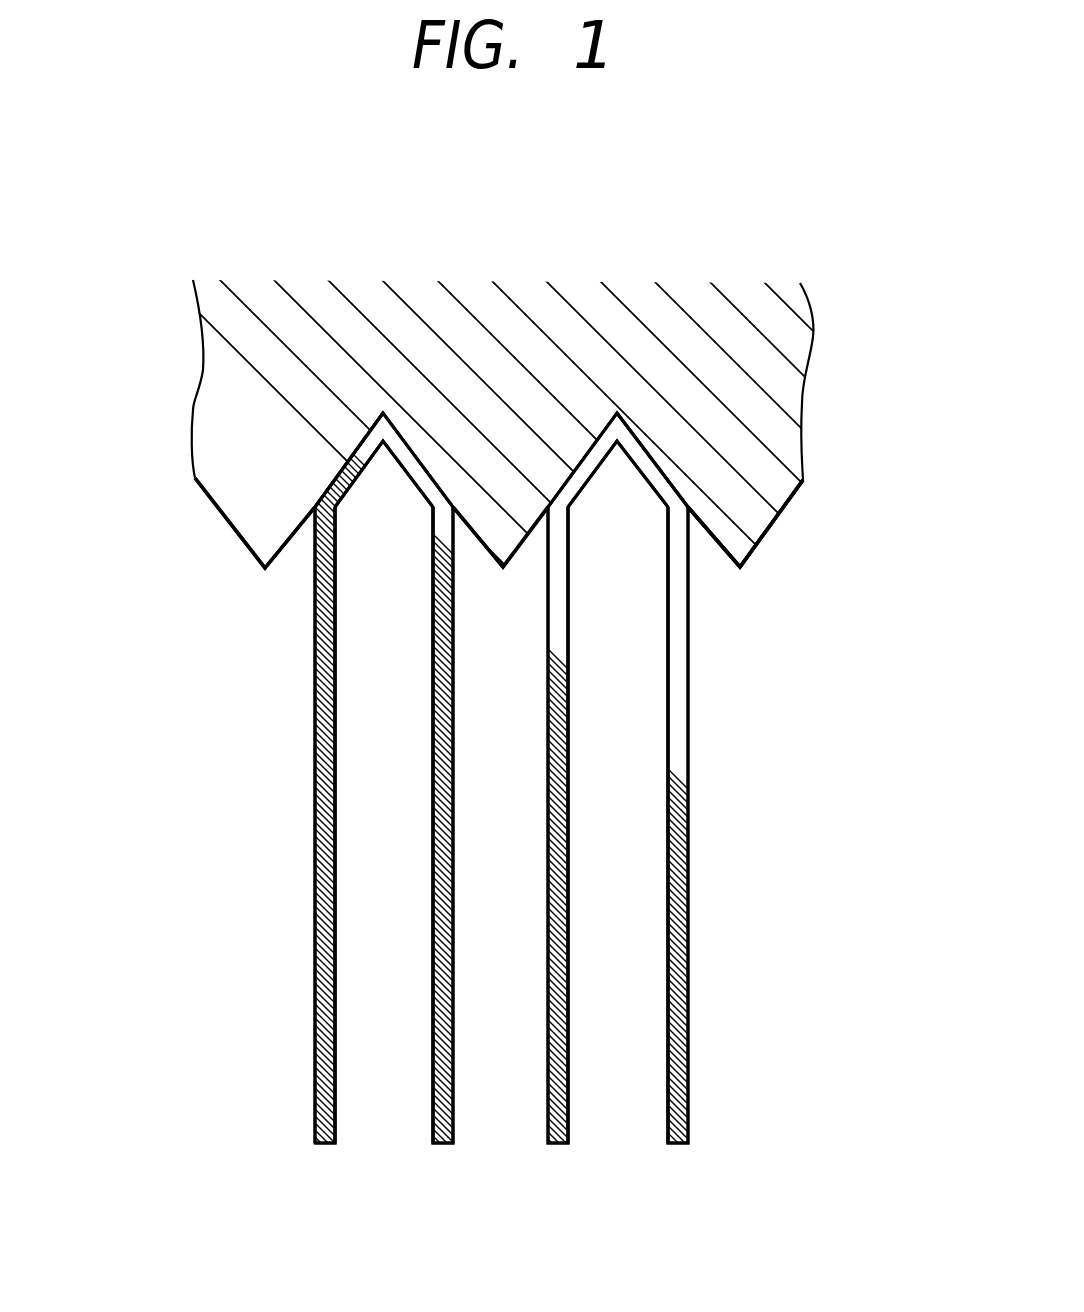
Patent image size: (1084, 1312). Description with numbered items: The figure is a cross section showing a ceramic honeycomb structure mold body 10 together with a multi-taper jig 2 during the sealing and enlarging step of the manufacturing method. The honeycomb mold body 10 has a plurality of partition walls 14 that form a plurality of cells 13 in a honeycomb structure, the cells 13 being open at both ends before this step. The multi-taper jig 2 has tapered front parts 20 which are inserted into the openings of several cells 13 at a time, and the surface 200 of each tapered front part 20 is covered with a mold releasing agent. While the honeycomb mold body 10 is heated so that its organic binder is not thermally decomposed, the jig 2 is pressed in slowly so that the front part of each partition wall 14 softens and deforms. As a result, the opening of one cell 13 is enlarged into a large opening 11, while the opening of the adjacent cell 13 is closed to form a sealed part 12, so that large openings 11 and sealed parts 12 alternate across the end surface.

The multi-taper jig 2 is at (493, 423).
The ceramic honeycomb structure mold body 10 is at (740, 792).
The large opening 11 is at (365, 445).
The sealed part 12 is at (383, 413).
The cell 13 is at (483, 945).
The partition wall 14 is at (437, 768).
The tapered front part 20 is at (250, 503).
The surface of the tapered front part 200 is at (713, 542).